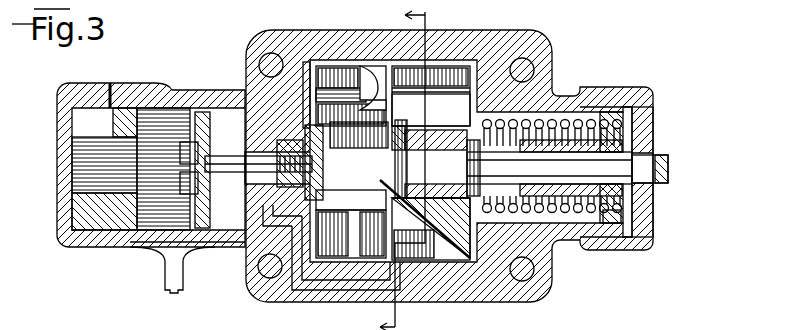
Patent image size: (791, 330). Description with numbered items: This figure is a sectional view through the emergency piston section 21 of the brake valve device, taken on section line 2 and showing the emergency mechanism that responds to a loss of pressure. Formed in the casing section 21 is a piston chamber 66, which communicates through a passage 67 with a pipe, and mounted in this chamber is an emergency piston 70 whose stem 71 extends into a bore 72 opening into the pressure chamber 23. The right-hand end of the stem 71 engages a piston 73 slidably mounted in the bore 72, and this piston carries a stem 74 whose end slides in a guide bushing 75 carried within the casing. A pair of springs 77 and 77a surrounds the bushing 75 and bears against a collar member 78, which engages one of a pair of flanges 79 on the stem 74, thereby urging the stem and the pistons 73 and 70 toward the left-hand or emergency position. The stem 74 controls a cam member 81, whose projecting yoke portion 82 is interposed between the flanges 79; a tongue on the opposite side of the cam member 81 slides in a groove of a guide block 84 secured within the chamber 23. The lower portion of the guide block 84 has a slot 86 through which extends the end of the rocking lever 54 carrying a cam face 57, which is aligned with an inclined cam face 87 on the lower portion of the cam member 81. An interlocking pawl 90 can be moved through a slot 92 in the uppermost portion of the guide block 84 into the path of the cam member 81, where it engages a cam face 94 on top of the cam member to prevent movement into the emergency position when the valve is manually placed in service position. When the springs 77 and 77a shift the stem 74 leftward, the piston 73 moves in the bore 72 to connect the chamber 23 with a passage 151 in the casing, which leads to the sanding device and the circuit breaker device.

The section line 2- 2 is at (414, 170).
The emergency piston section 21 is at (513, 298).
The pressure chamber 23 is at (310, 80).
The rocking lever 54 is at (386, 228).
The cam face 57 is at (382, 205).
The piston chamber 66 is at (163, 122).
The passage 67 is at (228, 238).
The emergency piston 70 is at (222, 110).
The stem 71 is at (274, 130).
The bore 72 is at (250, 128).
The piston 73 is at (315, 198).
The stem 74 is at (335, 180).
The guide bushing 75 is at (627, 146).
The spring 77 is at (620, 210).
The spring 77a is at (620, 218).
The collar member 78 is at (477, 214).
The flanges 79 is at (468, 160).
The cam member 81 is at (466, 100).
The yoke portion 82 is at (468, 142).
The guide block 84 is at (456, 252).
The slot 86 is at (390, 257).
The inclined cam face 87 is at (420, 210).
The pawl 90 is at (363, 95).
The slot 92 is at (382, 75).
The cam face 94 is at (396, 128).
The passage 151 is at (250, 272).